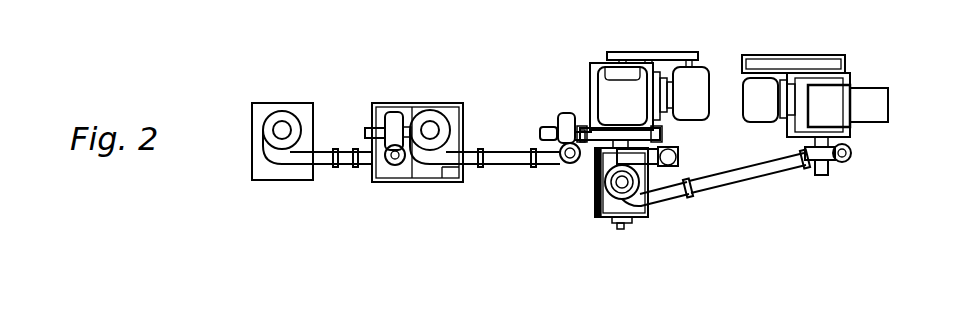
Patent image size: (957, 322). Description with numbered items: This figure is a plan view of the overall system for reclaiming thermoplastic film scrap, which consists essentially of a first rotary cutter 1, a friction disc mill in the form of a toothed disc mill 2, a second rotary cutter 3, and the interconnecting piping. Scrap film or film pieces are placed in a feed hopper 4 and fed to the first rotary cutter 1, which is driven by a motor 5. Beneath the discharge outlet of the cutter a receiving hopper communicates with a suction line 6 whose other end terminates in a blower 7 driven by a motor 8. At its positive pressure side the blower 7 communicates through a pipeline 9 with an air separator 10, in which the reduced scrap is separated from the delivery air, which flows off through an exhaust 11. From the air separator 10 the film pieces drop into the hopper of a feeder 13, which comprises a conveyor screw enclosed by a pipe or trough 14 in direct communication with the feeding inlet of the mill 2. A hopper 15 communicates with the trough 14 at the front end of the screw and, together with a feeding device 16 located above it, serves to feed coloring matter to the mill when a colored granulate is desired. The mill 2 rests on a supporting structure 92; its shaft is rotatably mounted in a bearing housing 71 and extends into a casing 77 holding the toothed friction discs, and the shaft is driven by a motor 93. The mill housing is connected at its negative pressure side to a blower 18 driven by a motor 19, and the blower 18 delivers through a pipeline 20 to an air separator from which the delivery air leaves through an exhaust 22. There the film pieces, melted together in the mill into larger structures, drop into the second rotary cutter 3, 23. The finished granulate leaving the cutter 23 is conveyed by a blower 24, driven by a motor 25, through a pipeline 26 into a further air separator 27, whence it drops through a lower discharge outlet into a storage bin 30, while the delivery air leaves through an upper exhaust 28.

The first rotary cutter 1 is at (845, 93).
The toothed disc mill 2 is at (580, 88).
The second rotary cutter 3 is at (442, 110).
The feed hopper 4 is at (877, 103).
The motor 5 is at (757, 100).
The suction line 6 is at (851, 142).
The blower 7 is at (805, 162).
The motor 8 is at (826, 177).
The pipeline 9 is at (753, 178).
The air separator 10 is at (651, 198).
The exhaust 11 is at (626, 190).
The feeder 13 is at (588, 192).
The pipe or trough 14 is at (595, 168).
The hopper 15 is at (612, 196).
The feeding device 16 is at (679, 162).
The blower 18 is at (567, 120).
The motor 19 is at (542, 127).
The pipeline 20 is at (502, 166).
The exhaust 22 is at (430, 128).
The second rotary cutter 23 is at (432, 174).
The blower 24 is at (395, 120).
The motor 25 is at (366, 128).
The pipeline 26 is at (342, 166).
The air separator 27 is at (298, 127).
The upper exhaust 28 is at (281, 127).
The storage bin 30 is at (265, 178).
The bearing housing 71 is at (640, 98).
The casing 77 is at (645, 138).
The supporting structure 92 is at (592, 64).
The motor 93 is at (698, 85).